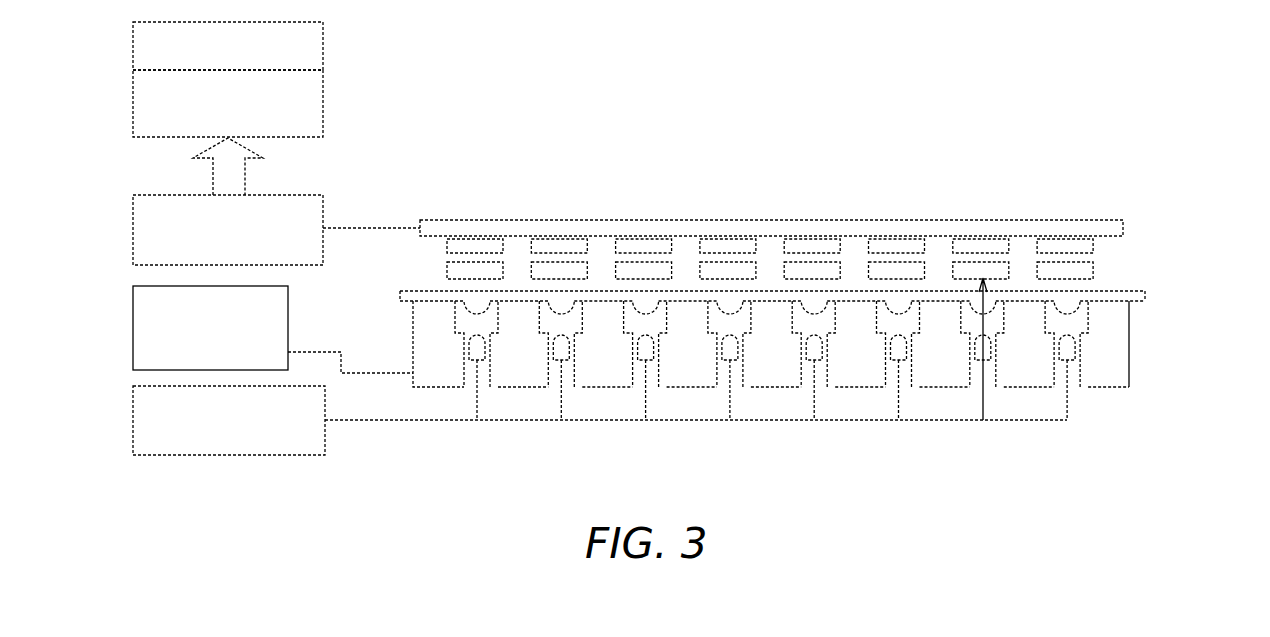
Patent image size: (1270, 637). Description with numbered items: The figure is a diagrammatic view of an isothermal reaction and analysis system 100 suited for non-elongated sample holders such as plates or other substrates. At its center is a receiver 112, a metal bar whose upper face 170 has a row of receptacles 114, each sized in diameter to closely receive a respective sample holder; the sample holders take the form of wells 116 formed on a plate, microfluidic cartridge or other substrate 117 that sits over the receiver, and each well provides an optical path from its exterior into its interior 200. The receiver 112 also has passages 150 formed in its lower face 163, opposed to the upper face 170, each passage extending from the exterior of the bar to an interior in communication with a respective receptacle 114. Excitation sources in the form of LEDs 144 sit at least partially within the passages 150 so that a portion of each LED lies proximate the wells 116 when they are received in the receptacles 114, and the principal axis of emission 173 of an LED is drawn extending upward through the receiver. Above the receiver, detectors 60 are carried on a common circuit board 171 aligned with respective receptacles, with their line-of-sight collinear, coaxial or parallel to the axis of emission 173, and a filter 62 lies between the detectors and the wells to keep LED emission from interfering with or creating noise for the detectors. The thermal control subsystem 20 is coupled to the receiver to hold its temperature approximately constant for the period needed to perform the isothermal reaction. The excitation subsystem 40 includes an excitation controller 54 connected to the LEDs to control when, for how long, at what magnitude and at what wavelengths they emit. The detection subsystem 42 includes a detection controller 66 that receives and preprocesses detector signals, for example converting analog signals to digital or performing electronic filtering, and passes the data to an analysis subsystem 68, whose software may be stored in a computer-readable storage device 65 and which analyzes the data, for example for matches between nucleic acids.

The thermal control subsystem 20 is at (132, 358).
The excitation subsystem 40 is at (108, 489).
The detection subsystem 42 is at (105, 294).
The excitation controller 54 is at (325, 442).
The detectors 60 is at (498, 250).
The filter 62 is at (476, 313).
The computer-readable storage device 65 is at (325, 43).
The detection controller 66 is at (325, 207).
The analysis subsystem 68 is at (325, 103).
The isothermal reaction and analysis system 100 is at (845, 70).
The receiver 112 is at (1127, 344).
The receptacles 114 is at (474, 326).
The wells 116 is at (474, 312).
The substrate 117 is at (1145, 294).
The LEDs 144 is at (476, 344).
The passages 150 is at (482, 382).
The lower face 163 is at (1103, 387).
The upper face 170 is at (1110, 300).
The circuit board 171 is at (1123, 232).
The axis of emission 173 is at (997, 302).
The interior 200 is at (561, 300).